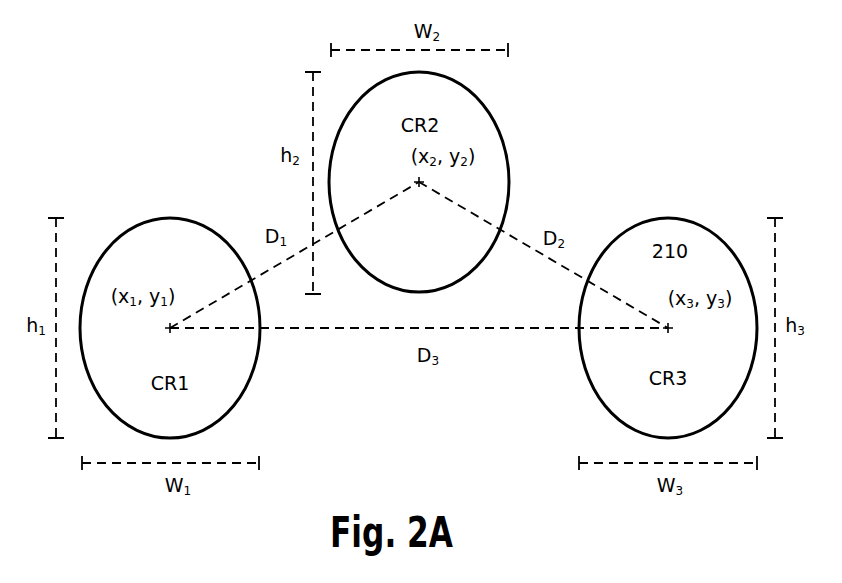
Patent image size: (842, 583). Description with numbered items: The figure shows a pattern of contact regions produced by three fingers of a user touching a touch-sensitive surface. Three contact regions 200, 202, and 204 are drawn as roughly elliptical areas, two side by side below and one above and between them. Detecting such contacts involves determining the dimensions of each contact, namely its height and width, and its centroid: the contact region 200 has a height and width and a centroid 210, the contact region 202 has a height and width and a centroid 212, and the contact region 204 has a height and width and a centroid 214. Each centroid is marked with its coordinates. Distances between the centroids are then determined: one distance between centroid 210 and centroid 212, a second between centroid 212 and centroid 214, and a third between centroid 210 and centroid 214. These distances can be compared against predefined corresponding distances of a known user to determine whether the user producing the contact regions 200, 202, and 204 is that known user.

The contact region 200 is at (167, 218).
The contact region 202 is at (495, 118).
The contact region 204 is at (668, 218).
The centroid 210 is at (174, 330).
The centroid 212 is at (417, 182).
The centroid 214 is at (672, 328).